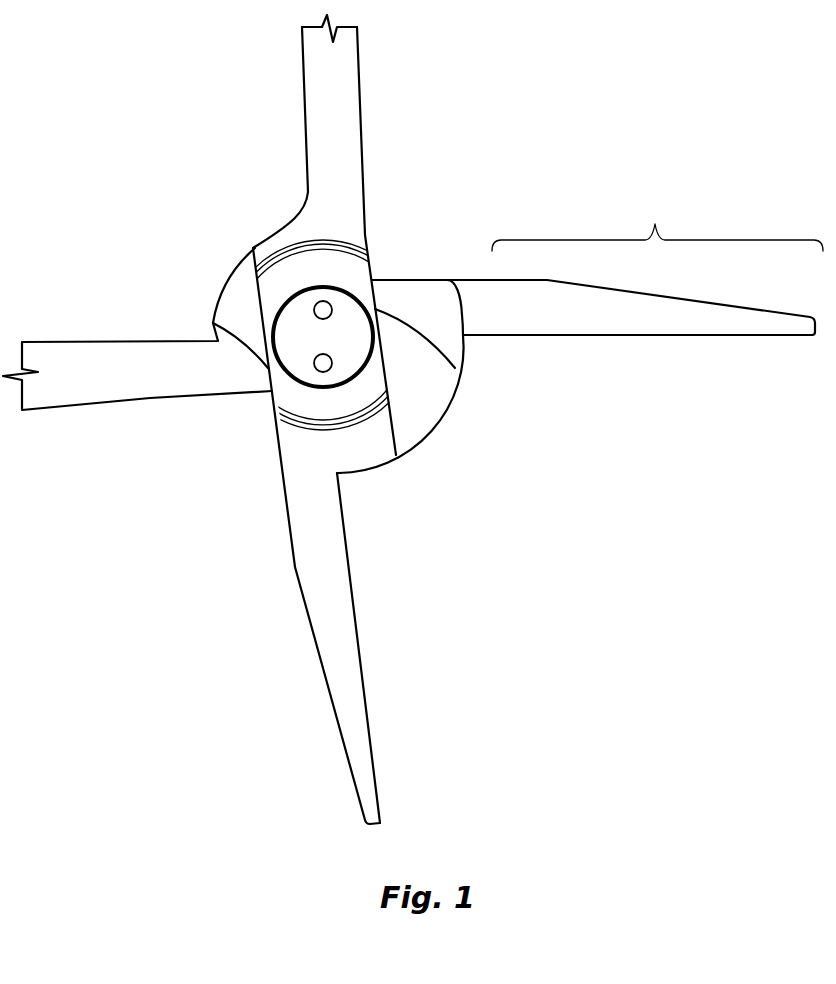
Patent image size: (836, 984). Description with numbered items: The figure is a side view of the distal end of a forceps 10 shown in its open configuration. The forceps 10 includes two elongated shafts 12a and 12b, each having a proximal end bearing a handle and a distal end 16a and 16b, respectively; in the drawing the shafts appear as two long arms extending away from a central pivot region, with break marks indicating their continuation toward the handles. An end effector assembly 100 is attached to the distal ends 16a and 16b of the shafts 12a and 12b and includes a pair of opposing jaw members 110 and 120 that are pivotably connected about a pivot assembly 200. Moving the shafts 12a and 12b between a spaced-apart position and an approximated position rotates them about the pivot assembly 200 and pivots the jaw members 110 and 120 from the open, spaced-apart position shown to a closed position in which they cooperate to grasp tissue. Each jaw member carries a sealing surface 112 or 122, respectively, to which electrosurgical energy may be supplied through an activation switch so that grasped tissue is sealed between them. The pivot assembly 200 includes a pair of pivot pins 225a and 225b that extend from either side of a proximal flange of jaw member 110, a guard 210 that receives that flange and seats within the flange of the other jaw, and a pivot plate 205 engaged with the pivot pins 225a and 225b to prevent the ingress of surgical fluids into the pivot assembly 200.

The forceps 10 is at (116, 196).
The elongated shaft 12a is at (57, 397).
The elongated shaft 12b is at (340, 99).
The distal end 16a is at (240, 377).
The distal end 16b is at (340, 210).
The end effector assembly 100 is at (657, 224).
The jaw member 110 is at (760, 323).
The sealing surface 112 is at (647, 337).
The jaw member 120 is at (368, 785).
The sealing surface 122 is at (360, 655).
The pivot assembly 200 is at (288, 289).
The pivot plate 205 is at (288, 327).
The guard 210 is at (437, 385).
The pivot pin 225a is at (332, 309).
The pivot pin 225b is at (332, 364).